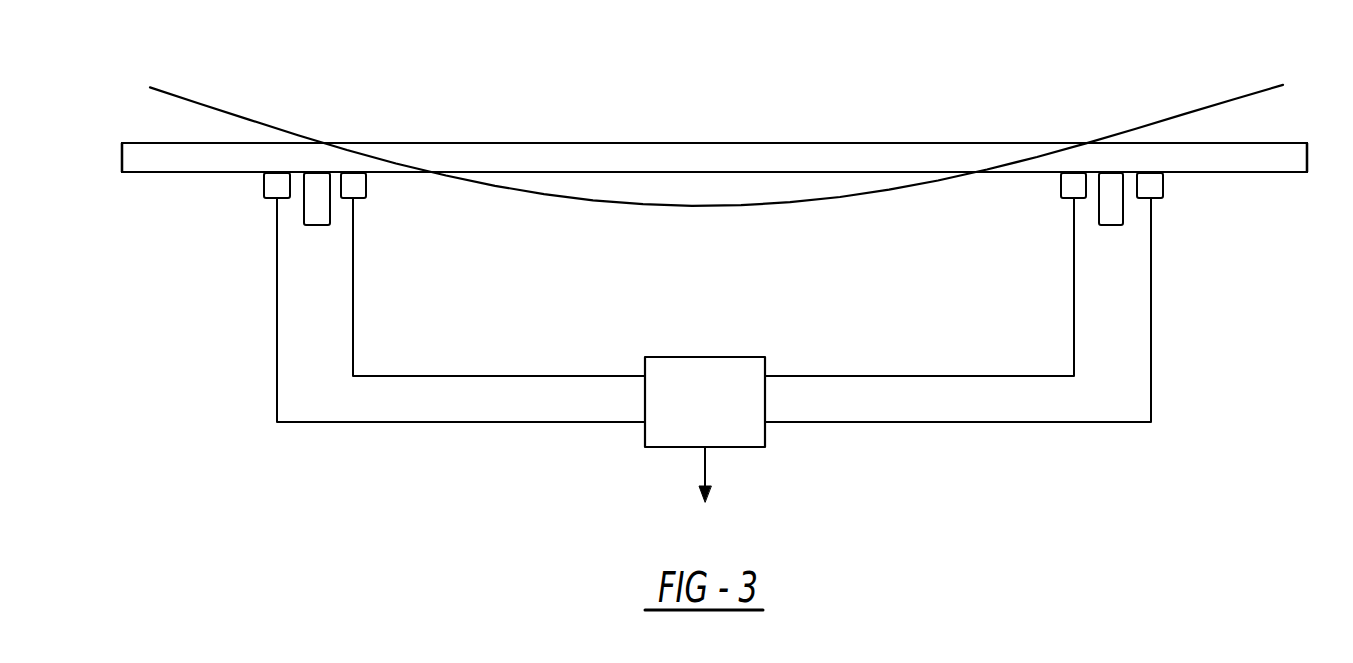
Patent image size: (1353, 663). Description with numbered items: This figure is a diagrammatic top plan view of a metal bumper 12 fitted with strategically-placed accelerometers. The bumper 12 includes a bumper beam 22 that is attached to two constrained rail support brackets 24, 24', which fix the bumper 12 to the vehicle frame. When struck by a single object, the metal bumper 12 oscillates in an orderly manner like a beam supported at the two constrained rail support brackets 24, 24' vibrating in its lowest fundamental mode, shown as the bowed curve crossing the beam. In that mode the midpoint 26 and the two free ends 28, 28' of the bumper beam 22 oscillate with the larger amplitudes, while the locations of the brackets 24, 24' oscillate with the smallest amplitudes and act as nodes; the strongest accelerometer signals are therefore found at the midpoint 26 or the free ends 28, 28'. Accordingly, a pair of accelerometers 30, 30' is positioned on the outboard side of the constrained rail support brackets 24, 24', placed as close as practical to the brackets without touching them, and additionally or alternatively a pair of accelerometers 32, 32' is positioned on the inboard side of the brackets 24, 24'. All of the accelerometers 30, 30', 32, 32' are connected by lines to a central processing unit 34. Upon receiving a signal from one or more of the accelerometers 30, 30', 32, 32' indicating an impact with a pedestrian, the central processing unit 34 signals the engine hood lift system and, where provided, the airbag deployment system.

The metal bumper 12 is at (1278, 155).
The bumper beam 22 is at (502, 155).
The midpoint 26 is at (713, 160).
The free end 28 is at (128, 204).
The free end 28' is at (1325, 198).
The accelerometer 30 is at (421, 297).
The accelerometer 32 is at (493, 274).
The constrained rail support bracket 24 is at (322, 239).
The accelerometer 30' is at (1018, 297).
The accelerometer 32' is at (925, 274).
The constrained rail support bracket 24' is at (1125, 238).
The central processing unit 34 is at (738, 427).